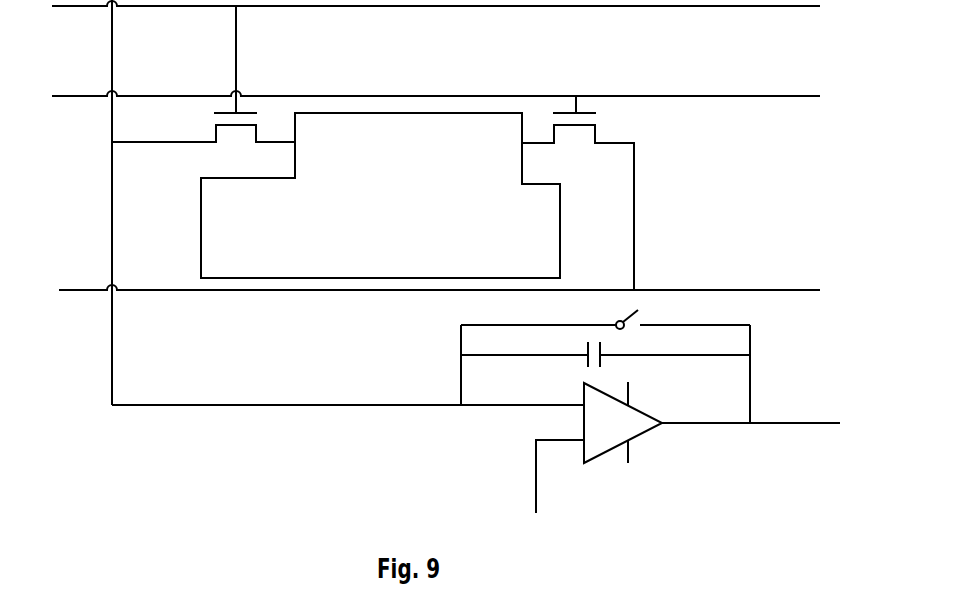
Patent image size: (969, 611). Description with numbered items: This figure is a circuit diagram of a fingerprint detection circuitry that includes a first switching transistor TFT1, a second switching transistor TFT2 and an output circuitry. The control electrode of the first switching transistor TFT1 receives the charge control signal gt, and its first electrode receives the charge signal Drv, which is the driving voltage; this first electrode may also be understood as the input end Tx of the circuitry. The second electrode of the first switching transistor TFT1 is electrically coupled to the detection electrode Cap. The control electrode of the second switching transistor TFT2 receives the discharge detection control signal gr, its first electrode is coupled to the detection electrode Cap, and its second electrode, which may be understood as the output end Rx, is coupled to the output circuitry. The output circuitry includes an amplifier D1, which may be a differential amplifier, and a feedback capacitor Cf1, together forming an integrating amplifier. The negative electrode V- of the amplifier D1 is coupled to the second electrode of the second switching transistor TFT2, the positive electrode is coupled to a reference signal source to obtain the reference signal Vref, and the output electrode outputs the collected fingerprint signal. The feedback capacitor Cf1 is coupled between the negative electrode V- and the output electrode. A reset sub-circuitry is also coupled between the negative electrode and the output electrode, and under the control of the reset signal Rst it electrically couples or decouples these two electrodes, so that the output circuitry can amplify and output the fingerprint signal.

The discharge detection control signal gr is at (423, 7).
The charge control signal gt is at (423, 96).
The charge signal Drv is at (418, 202).
The first switching transistor TFT1 is at (578, 193).
The second switching transistor TFT2 is at (203, 88).
The detection electrode Cap is at (380, 195).
The input end Tx is at (746, 269).
The output end Rx is at (348, 419).
The reset signal Rst is at (605, 358).
The feedback capacitor Cf1 is at (605, 363).
The amplifier D1 is at (712, 423).
The negative electrode V- is at (650, 453).
The reference signal Vref is at (550, 494).